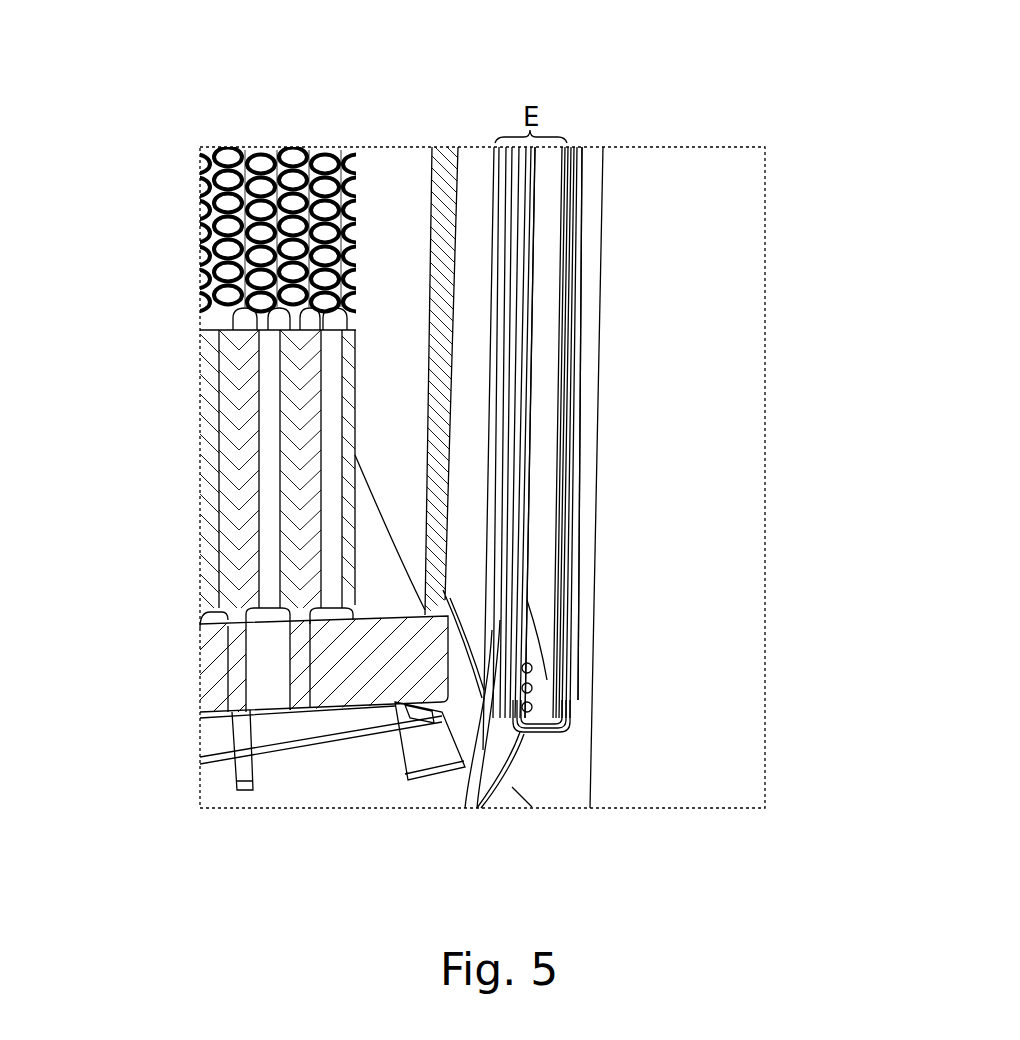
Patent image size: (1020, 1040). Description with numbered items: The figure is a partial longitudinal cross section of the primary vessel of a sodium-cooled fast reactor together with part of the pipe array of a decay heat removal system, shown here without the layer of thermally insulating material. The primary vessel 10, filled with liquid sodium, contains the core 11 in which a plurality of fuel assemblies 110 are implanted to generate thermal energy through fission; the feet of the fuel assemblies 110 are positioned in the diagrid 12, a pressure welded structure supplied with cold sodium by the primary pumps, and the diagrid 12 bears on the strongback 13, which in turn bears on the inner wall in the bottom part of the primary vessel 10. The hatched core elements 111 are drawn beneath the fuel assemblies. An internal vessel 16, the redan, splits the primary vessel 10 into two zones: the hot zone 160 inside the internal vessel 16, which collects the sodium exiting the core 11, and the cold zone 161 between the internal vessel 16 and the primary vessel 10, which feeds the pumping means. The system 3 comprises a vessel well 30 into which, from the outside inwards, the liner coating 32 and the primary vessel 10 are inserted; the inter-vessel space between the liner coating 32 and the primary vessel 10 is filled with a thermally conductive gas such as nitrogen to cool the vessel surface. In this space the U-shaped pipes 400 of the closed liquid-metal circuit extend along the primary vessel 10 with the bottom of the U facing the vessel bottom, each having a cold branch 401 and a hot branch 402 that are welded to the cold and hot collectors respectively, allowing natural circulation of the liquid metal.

The system 3 is at (843, 285).
The primary vessel 10 is at (503, 443).
The core 11 is at (205, 378).
The fuel assemblies 110 is at (203, 240).
The coil cores 111 is at (226, 458).
The diagrid 12 is at (208, 660).
The strongback 13 is at (245, 722).
The internal vessel 16 is at (440, 152).
The hot zone 160 is at (373, 177).
The cold zone 161 is at (480, 173).
The vessel well 30 is at (693, 412).
The liner coating 32 is at (582, 262).
The U-shaped pipes 400 is at (566, 738).
The cold branch 401 is at (575, 497).
The hot branch 402 is at (522, 553).